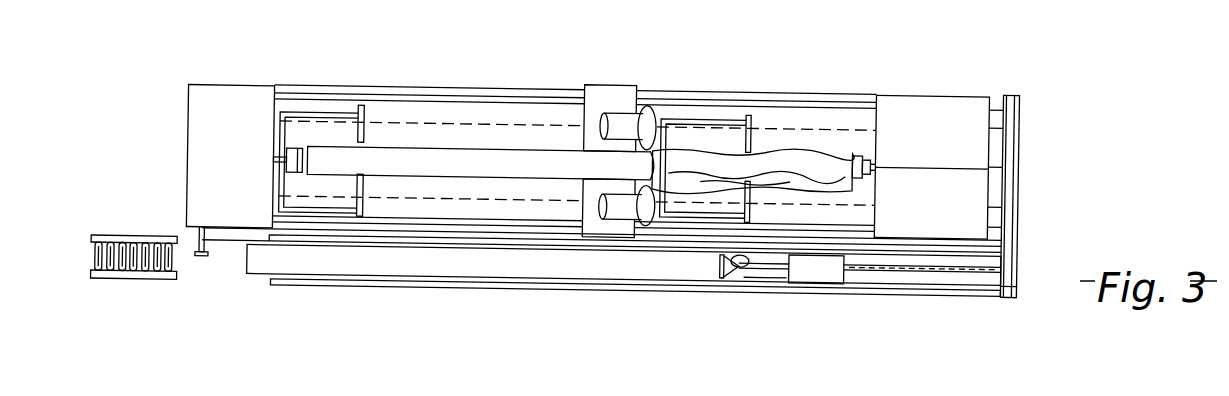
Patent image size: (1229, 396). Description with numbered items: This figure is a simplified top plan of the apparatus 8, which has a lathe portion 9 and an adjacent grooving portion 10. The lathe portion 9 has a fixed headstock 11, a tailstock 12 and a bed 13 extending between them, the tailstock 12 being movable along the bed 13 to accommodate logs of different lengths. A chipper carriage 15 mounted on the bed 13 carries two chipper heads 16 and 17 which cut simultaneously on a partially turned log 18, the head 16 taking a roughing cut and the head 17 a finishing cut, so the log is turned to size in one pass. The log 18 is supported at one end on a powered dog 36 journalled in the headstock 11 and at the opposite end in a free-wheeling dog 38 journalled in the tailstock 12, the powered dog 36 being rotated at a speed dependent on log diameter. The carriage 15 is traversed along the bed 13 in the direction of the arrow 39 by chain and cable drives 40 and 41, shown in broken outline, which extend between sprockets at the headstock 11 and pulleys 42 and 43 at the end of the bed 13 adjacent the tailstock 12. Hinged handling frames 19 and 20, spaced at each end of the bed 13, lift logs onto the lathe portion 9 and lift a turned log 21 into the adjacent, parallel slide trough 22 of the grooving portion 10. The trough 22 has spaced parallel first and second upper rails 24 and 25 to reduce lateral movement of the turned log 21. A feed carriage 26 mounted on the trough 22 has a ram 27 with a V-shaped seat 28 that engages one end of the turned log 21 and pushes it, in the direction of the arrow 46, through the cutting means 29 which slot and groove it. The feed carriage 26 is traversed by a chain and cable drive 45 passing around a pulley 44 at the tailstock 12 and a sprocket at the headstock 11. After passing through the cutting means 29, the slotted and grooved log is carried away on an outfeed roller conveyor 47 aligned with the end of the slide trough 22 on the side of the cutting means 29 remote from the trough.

The apparatus 8 is at (872, 82).
The lathe portion 9 is at (420, 88).
The grooving portion 10 is at (546, 262).
The headstock 11 is at (238, 87).
The tailstock 12 is at (945, 80).
The bed 13 is at (788, 88).
The chipper carriage 15 is at (592, 85).
The chipper head 16 is at (622, 116).
The chipper head 17 is at (622, 212).
The partially turned log 18 is at (493, 142).
The hinged handling frame 19 is at (333, 87).
The hinged handling frame 20 is at (749, 124).
The turned log 21 is at (587, 270).
The slide trough 22 is at (770, 277).
The first upper rail 24 is at (1004, 244).
The second upper rail 25 is at (978, 289).
The feed carriage 26 is at (803, 281).
The ram 27 is at (721, 256).
The V-shaped seat 28 is at (726, 279).
The cutting means 29 is at (232, 259).
The powered dog 36 is at (286, 165).
The free-wheeling dog 38 is at (861, 160).
The arrow 39 is at (585, 61).
The chain and cable drive 40 is at (432, 126).
The chain and cable drive 41 is at (395, 203).
The pulley 42 is at (1018, 124).
The pulley 43 is at (1018, 205).
The pulley 44 is at (1018, 265).
The chain and cable drive 45 is at (912, 275).
The arrow 46 is at (400, 297).
The outfeed roller conveyor 47 is at (130, 243).